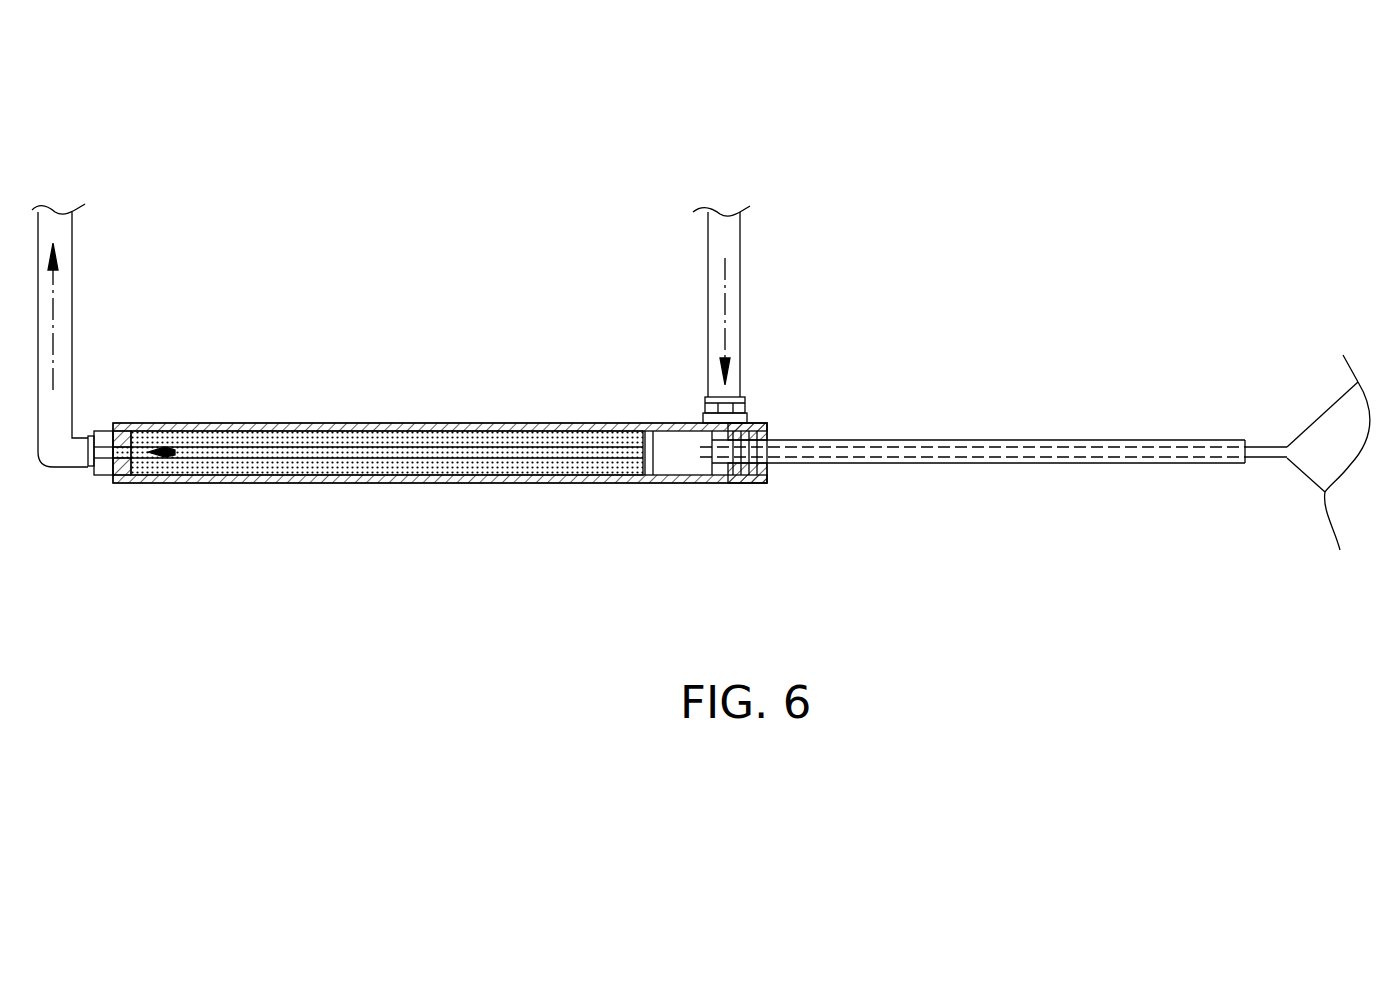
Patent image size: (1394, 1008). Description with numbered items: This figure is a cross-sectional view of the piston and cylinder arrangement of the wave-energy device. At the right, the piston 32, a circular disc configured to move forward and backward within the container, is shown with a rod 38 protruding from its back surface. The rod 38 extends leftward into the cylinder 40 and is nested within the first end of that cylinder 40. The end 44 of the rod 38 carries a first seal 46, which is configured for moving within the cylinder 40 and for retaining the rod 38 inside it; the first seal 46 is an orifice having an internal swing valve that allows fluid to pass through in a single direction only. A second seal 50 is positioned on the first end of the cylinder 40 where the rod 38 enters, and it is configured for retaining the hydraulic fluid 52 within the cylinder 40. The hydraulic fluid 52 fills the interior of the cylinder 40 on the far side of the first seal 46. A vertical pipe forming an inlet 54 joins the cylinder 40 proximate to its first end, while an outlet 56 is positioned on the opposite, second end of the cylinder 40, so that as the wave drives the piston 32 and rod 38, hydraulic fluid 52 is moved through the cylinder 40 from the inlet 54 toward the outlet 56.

The piston 32 is at (1312, 455).
The rod 38 is at (948, 463).
The cylinder 40 is at (357, 483).
The end 44 is at (700, 454).
The first seal 46 is at (654, 464).
The second seal 50 is at (745, 468).
The hydraulic fluid 52 is at (487, 452).
The inlet 54 is at (717, 400).
The outlet 56 is at (103, 468).